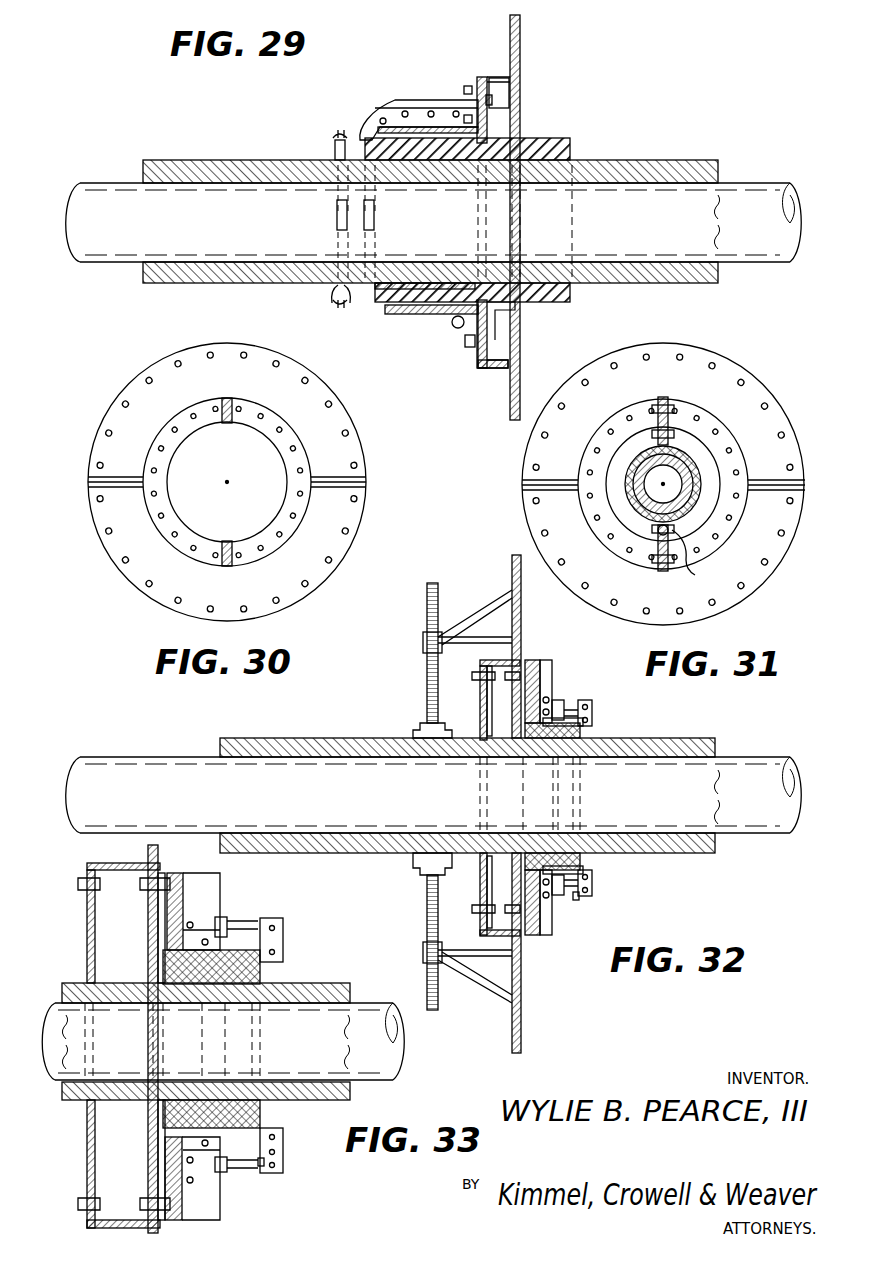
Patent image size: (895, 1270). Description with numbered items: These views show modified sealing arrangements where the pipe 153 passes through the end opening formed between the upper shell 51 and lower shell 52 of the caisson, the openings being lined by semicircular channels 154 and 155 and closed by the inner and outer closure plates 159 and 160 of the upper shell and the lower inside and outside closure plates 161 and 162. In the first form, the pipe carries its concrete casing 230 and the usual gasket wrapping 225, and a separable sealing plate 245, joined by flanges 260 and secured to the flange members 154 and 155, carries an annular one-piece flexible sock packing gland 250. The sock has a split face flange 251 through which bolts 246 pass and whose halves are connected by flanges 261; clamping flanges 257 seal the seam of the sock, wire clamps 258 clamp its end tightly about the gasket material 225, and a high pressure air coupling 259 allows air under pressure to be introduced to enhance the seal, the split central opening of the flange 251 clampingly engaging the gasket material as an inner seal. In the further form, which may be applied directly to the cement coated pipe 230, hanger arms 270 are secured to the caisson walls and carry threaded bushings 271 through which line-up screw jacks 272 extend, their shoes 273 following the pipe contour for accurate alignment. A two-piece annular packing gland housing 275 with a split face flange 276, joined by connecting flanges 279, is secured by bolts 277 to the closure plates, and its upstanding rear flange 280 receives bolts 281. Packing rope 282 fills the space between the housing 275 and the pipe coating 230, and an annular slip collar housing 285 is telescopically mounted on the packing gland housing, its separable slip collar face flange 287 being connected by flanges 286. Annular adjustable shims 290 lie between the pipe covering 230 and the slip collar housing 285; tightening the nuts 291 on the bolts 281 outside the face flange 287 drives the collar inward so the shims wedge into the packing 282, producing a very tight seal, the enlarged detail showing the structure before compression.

In FIG. 29, the upper shell 51 is at (521, 40).
In FIG. 32, the upper shell 51 is at (512, 568).
In FIG. 29, the lower shell 52 is at (521, 362).
In FIG. 32, the lower shell 52 is at (512, 1020).
In FIG. 29, the pipe 153 is at (762, 180).
In FIG. 32, the pipe 153 is at (100, 757).
In FIG. 33, the pipe 153 is at (50, 1003).
In FIG. 29, the semicircular channel 154 is at (492, 78).
In FIG. 32, the semicircular channel 154 is at (482, 663).
In FIG. 33, the semicircular channel 154 is at (90, 864).
In FIG. 29, the semicircular channel 155 is at (490, 368).
In FIG. 32, the semicircular channel 155 is at (487, 938).
In FIG. 32, the inner closure plate 159 is at (480, 698).
In FIG. 33, the inner closure plate 159 is at (87, 905).
In FIG. 32, the outer closure plate 160 is at (487, 715).
In FIG. 33, the outer closure plate 160 is at (158, 915).
In FIG. 32, the lower inside closure plate 161 is at (487, 875).
In FIG. 32, the lower outside closure plate 162 is at (487, 896).
In FIG. 29, the gasket wrapping 225 is at (568, 142).
In FIG. 29, the concrete casing 230 is at (688, 162).
In FIG. 32, the concrete casing 230 is at (225, 738).
In FIG. 33, the concrete casing 230 is at (68, 983).
In FIG. 29, the sealing plate 245 is at (478, 80).
In FIG. 30, the sealing plate 245 is at (108, 400).
In FIG. 31, the sealing plate 245 is at (725, 372).
In FIG. 29, the bolts 246 is at (490, 112).
In FIG. 30, the bolts 246 is at (170, 436).
In FIG. 31, the bolts 246 is at (600, 450).
In FIG. 29, the sock packing gland 250 is at (390, 318).
In FIG. 31, the sock packing gland 250 is at (710, 495).
In FIG. 29, the face flange 251 is at (465, 338).
In FIG. 30, the face flange 251 is at (280, 420).
In FIG. 31, the face flange 251 is at (722, 430).
In FIG. 29, the clamping flanges 257 is at (366, 140).
In FIG. 31, the clamping flanges 257 is at (672, 418).
In FIG. 29, the wire clamps 258 is at (345, 305).
In FIG. 31, the wire clamps 258 is at (628, 500).
In FIG. 29, the high pressure air coupling 259 is at (510, 312).
In FIG. 31, the high pressure air coupling 259 is at (696, 570).
In FIG. 30, the flanges 260 is at (85, 492).
In FIG. 31, the flanges 260 is at (522, 495).
In FIG. 29, the flanges 261 is at (450, 325).
In FIG. 30, the flanges 261 is at (238, 372).
In FIG. 31, the flanges 261 is at (672, 378).
In FIG. 32, the hanger arms 270 is at (490, 605).
In FIG. 32, the threaded bushings 271 is at (427, 636).
In FIG. 32, the line-up screw jacks 272 is at (423, 660).
In FIG. 32, the shoes 273 is at (415, 728).
In FIG. 32, the packing gland housing 275 is at (552, 700).
In FIG. 33, the packing gland housing 275 is at (207, 938).
In FIG. 32, the face flange 276 is at (540, 672).
In FIG. 33, the face flange 276 is at (170, 873).
In FIG. 32, the bolts 277 is at (542, 660).
In FIG. 33, the bolts 277 is at (184, 882).
In FIG. 32, the connecting flanges 279 is at (533, 660).
In FIG. 33, the connecting flanges 279 is at (184, 900).
In FIG. 32, the rear flange 280 is at (566, 710).
In FIG. 33, the rear flange 280 is at (225, 917).
In FIG. 32, the bolts 281 is at (592, 704).
In FIG. 33, the bolts 281 is at (258, 918).
In FIG. 32, the packing rope 282 is at (523, 758).
In FIG. 33, the packing rope 282 is at (165, 1003).
In FIG. 33, the slip collar housing 285 is at (276, 950).
In FIG. 32, the connecting flanges 286 is at (592, 712).
In FIG. 33, the connecting flanges 286 is at (276, 1152).
In FIG. 32, the slip collar face flange 287 is at (592, 724).
In FIG. 33, the slip collar face flange 287 is at (274, 925).
In FIG. 32, the adjustable shims 290 is at (572, 760).
In FIG. 33, the adjustable shims 290 is at (262, 978).
In FIG. 32, the nuts 291 is at (590, 895).
In FIG. 33, the nuts 291 is at (265, 1163).